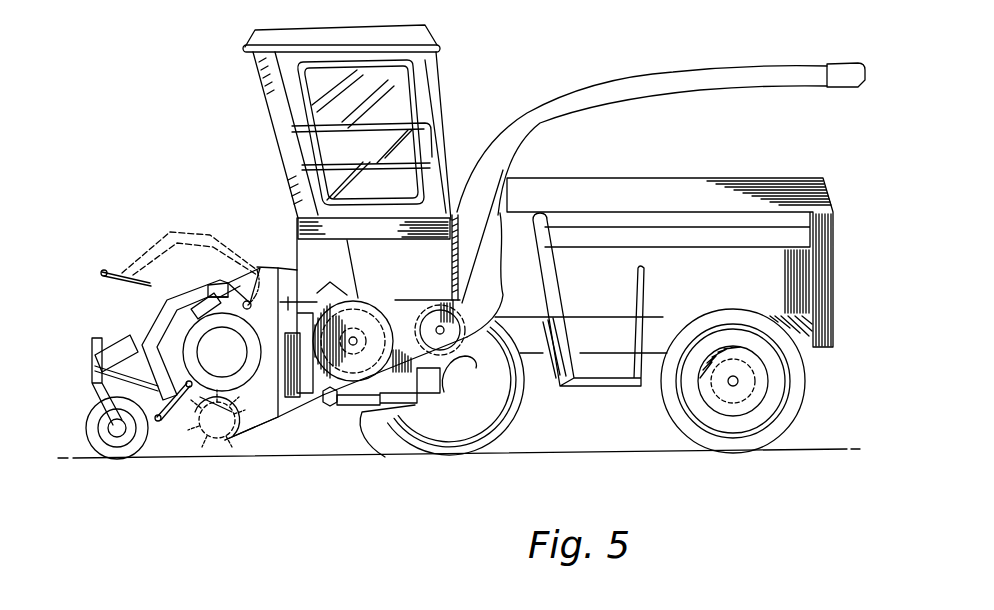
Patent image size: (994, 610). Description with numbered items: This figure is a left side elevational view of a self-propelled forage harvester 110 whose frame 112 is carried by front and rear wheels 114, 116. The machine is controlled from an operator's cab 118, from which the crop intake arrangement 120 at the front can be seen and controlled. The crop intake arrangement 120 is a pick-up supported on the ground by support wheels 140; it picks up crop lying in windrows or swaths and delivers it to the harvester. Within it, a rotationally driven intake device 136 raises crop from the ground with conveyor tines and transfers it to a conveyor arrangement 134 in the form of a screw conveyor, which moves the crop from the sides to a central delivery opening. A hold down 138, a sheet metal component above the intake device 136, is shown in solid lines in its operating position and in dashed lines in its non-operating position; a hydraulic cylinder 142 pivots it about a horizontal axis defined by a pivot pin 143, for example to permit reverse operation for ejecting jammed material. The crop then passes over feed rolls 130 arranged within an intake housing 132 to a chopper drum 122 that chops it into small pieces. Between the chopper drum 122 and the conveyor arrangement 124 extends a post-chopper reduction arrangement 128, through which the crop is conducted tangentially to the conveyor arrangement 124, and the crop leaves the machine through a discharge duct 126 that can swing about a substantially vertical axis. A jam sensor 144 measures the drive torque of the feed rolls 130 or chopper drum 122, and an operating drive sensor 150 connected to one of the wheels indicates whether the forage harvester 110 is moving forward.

The forage harvester 110 is at (192, 163).
The frame 112 is at (541, 360).
The front wheels 114 is at (508, 425).
The rear wheels 116 is at (803, 404).
The operator's cab 118 is at (274, 104).
The crop intake arrangement 120 is at (116, 225).
The chopper drum 122 is at (341, 393).
The conveyor arrangement 124 is at (426, 298).
The discharge duct 126 is at (566, 92).
The post-chopper reduction arrangement 128 is at (378, 437).
The feed rolls 130 is at (274, 380).
The intake housing 132 is at (288, 297).
The conveyor arrangement 134 is at (190, 333).
The intake device 136 is at (210, 445).
The hold down 138 is at (147, 242).
The support wheels 140 is at (105, 458).
The hydraulic cylinder 142 is at (204, 297).
The pivot pin 143 is at (254, 265).
The jam sensor 144 is at (361, 297).
The operating drive sensor 150 is at (806, 374).